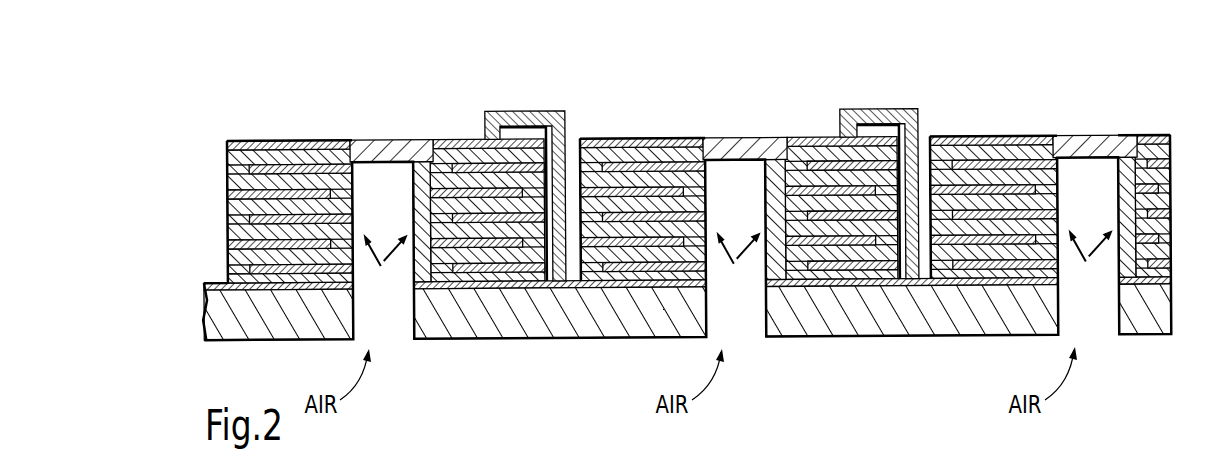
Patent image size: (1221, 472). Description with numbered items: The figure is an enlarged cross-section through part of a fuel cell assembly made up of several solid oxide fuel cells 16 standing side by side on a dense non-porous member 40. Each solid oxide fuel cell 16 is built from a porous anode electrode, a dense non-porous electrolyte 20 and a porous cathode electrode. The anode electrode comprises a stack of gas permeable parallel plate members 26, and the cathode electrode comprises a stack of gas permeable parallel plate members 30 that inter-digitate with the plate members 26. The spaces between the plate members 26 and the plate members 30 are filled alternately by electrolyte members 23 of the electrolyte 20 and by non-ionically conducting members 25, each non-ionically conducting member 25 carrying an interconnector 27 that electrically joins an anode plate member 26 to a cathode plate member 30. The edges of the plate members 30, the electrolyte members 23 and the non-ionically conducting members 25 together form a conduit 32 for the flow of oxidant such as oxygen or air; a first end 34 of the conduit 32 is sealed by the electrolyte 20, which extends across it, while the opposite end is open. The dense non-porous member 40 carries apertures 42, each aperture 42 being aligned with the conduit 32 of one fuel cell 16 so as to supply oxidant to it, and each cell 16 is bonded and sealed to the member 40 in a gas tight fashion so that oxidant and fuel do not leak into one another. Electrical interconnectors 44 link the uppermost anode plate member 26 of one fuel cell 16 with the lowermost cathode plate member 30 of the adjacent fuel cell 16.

The solid oxide fuel cell 16 is at (212, 100).
The dense non-porous electrolyte 20 is at (498, 318).
The electrolyte member 23 is at (270, 318).
The non-ionically conducting member 25 is at (897, 322).
The parallel plate member of the anode electrode 26 is at (958, 338).
The interconnector 27 is at (1018, 318).
The parallel plate member of the cathode electrode 30 is at (1062, 264).
The conduit 32 is at (1060, 156).
The first end of the conduit 34 is at (1122, 172).
The dense non-porous member 40 is at (868, 320).
The aperture 42 is at (1085, 326).
The electrical interconnector 44 is at (879, 110).